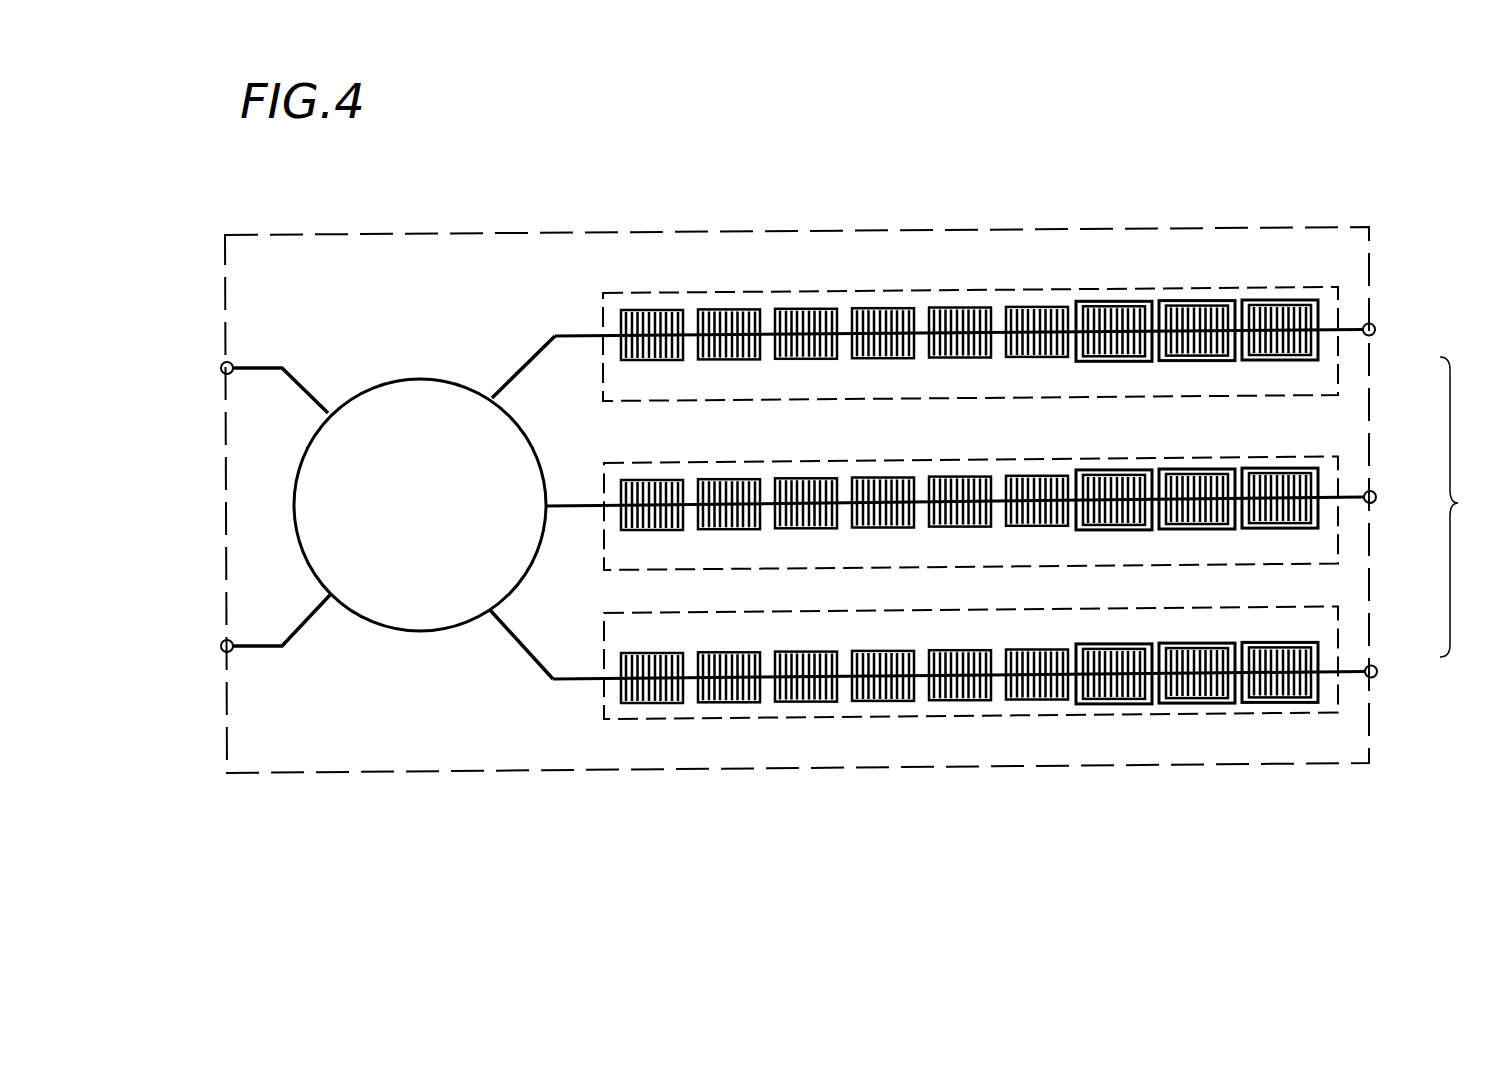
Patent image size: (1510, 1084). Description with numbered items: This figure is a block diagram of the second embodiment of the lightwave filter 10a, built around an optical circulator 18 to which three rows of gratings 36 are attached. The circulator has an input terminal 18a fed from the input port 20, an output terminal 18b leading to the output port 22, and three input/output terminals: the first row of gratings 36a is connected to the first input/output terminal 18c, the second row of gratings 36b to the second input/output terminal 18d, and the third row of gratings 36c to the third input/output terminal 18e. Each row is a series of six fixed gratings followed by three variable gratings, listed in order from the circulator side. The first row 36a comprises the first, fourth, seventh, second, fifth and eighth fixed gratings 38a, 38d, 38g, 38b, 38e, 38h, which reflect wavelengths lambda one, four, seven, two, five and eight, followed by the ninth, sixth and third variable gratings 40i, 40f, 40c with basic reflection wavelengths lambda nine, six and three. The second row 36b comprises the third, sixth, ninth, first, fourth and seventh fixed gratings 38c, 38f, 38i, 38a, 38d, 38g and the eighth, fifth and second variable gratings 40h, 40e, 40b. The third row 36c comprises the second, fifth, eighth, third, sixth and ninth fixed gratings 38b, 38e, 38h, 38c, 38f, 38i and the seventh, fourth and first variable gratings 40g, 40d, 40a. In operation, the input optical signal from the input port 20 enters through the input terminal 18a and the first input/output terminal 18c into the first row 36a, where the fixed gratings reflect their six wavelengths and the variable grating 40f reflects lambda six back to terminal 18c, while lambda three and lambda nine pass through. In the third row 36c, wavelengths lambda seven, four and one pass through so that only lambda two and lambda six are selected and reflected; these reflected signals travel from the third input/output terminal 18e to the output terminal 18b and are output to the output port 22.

The lightwave filter 10a is at (1340, 226).
The optical circulator 18 is at (417, 378).
The input terminal 18a is at (328, 410).
The output terminal 18b is at (332, 598).
The first input/output terminal 18c is at (492, 396).
The second input/output terminal 18d is at (548, 512).
The third input/output terminal 18e is at (488, 614).
The input port 20 is at (221, 361).
The output port 22 is at (221, 653).
The rows of gratings 36 is at (1466, 507).
The first row of gratings 36a is at (1338, 381).
The second row of gratings 36b is at (1338, 521).
The third row of gratings 36c is at (1338, 636).
The first fixed grating 38a is at (652, 309).
The second fixed grating 38b is at (883, 307).
The third fixed grating 38c is at (653, 479).
The fourth fixed grating 38d is at (729, 308).
The fifth fixed grating 38e is at (960, 306).
The sixth fixed grating 38f is at (730, 478).
The seventh fixed grating 38g is at (806, 307).
The eighth fixed grating 38h is at (1037, 306).
The ninth fixed grating 38i is at (805, 477).
The first variable grating 40a is at (1280, 702).
The second variable grating 40b is at (1280, 468).
The third variable grating 40c is at (1280, 300).
The fourth variable grating 40d is at (1197, 703).
The fifth variable grating 40e is at (1197, 469).
The sixth variable grating 40f is at (1197, 300).
The seventh variable grating 40g is at (1114, 704).
The eighth variable grating 40h is at (1114, 470).
The ninth variable grating 40i is at (1114, 301).